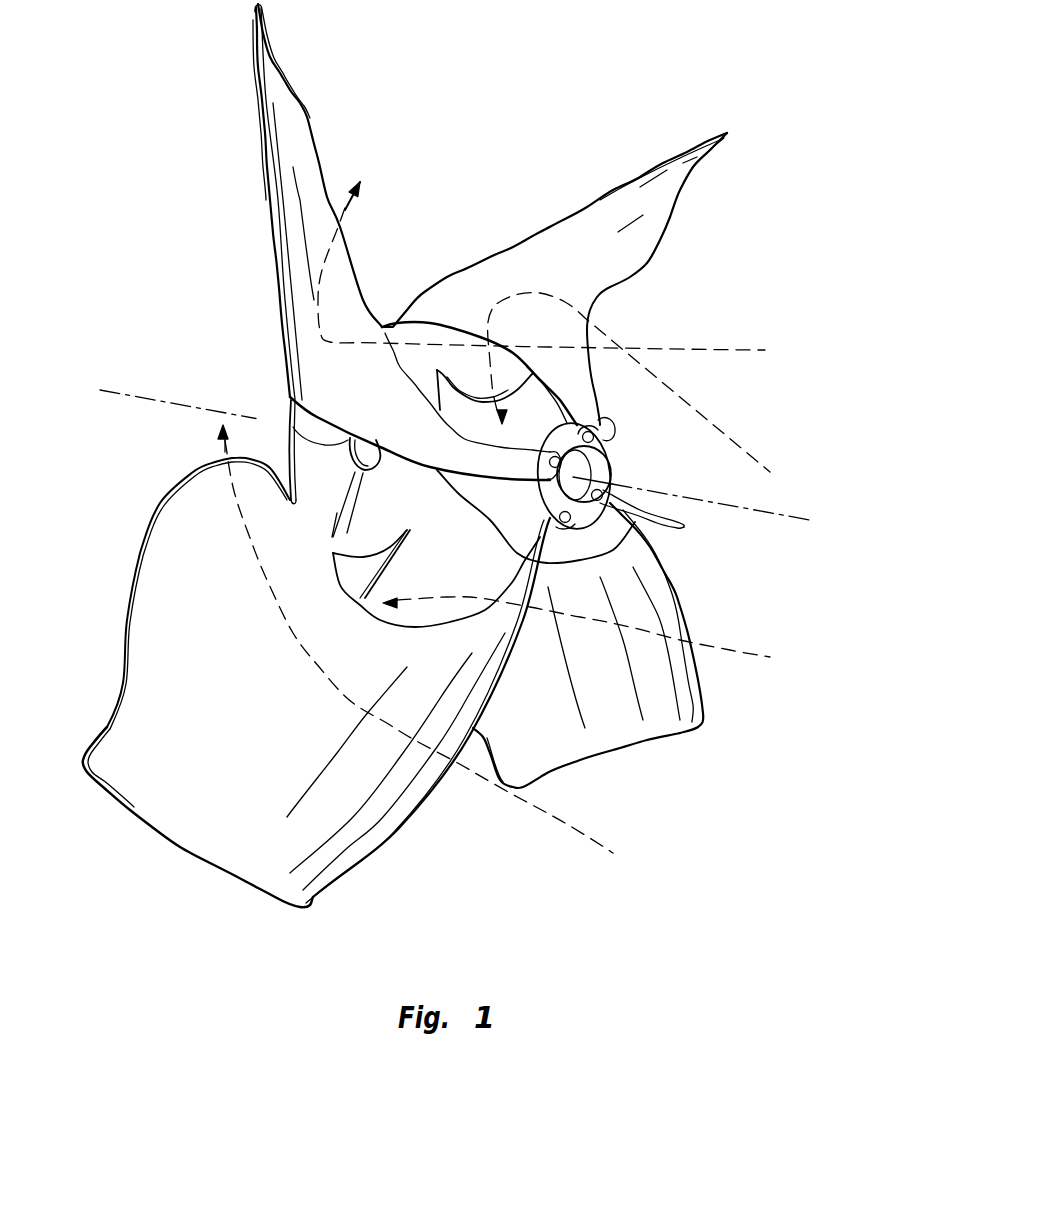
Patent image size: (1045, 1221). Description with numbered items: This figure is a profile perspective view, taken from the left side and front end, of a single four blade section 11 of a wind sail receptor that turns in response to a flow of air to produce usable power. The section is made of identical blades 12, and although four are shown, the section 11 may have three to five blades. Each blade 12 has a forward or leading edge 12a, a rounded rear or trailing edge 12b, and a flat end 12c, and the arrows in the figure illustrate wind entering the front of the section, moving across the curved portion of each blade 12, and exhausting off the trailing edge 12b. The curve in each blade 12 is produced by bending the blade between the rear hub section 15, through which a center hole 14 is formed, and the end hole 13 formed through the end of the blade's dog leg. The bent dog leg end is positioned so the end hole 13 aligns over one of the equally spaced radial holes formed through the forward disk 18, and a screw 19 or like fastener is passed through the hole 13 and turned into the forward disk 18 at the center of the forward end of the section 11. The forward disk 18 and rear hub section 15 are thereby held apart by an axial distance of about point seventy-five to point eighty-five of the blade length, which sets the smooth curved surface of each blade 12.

The single four blade section 11 is at (517, 150).
The blade 12 is at (414, 455).
The leading edge 12a is at (323, 167).
The trailing edge 12b is at (608, 287).
The flat end 12c is at (254, 31).
The end hole 13 is at (150, 397).
The center hole 14 is at (287, 423).
The rear hub section 15 is at (607, 447).
The forward disk 18 is at (607, 470).
The screw 19 is at (598, 433).